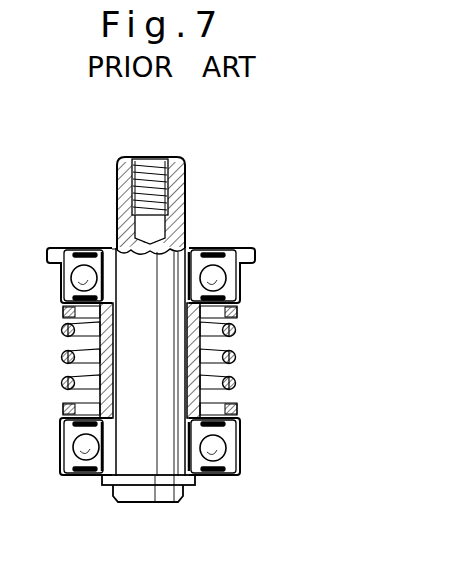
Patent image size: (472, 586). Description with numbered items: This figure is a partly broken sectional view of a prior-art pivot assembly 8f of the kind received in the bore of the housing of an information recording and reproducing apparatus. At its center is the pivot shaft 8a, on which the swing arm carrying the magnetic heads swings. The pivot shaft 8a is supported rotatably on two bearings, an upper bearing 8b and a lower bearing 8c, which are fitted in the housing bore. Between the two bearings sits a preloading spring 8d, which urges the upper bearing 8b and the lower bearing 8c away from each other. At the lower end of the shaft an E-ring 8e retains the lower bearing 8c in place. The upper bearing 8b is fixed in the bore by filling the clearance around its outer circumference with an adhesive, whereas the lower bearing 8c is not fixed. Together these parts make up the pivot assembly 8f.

The pivot shaft 8a is at (188, 193).
The upper bearing 8b is at (242, 257).
The lower bearing 8c is at (242, 461).
The preloading spring 8d is at (64, 359).
The E-ring 8e is at (153, 502).
The pivot assembly 8f is at (108, 237).